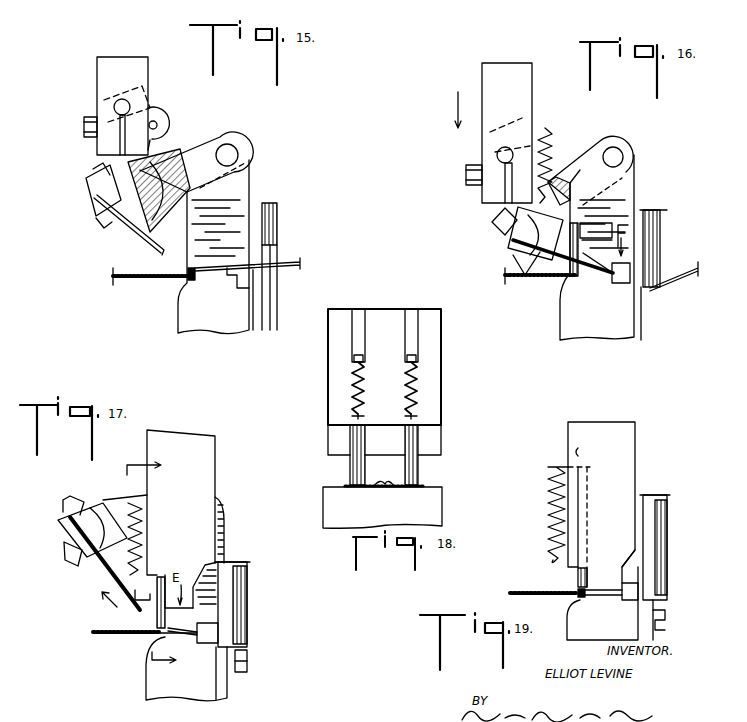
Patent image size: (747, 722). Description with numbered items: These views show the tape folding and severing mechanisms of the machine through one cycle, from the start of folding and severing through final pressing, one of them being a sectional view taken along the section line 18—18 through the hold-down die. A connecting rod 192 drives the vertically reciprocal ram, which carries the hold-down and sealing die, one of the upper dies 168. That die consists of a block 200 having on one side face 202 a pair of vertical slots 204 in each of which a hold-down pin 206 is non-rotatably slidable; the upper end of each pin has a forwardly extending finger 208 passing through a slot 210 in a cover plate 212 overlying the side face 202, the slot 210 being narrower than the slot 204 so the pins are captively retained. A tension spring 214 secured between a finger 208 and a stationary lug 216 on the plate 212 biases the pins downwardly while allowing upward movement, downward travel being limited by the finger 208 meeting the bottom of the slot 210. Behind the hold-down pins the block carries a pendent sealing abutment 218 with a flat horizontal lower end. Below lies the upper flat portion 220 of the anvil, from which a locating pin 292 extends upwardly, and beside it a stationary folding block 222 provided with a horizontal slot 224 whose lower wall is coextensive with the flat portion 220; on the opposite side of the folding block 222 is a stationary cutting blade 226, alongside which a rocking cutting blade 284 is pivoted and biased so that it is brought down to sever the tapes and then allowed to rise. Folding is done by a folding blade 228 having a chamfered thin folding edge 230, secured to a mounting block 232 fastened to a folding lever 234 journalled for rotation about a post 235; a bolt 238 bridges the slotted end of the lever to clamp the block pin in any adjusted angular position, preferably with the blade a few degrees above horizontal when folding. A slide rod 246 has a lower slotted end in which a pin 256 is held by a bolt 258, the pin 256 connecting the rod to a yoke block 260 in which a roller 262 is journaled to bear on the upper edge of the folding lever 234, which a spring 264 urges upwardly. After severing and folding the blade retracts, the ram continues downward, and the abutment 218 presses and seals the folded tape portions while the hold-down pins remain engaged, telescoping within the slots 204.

In FIG. 17, the section line 18— 18 is at (160, 565).
In FIG. 15, the upper dies 168 is at (288, 190).
In FIG. 16, the upper dies 168 is at (650, 178).
In FIG. 17, the upper dies 168 is at (235, 494).
In FIG. 15, the connecting rod 192 is at (195, 267).
In FIG. 17, the block 200 is at (213, 467).
In FIG. 19, the block 200 is at (630, 464).
In FIG. 19, the side face 202 is at (580, 450).
In FIG. 18, the vertical slots 204 is at (357, 318).
In FIG. 19, the vertical slots 204 is at (590, 518).
In FIG. 18, the hold-down pin 206 is at (420, 467).
In FIG. 18, the finger 208 is at (418, 360).
In FIG. 19, the finger 208 is at (558, 467).
In FIG. 16, the slot 210 is at (597, 247).
In FIG. 18, the slot 210 is at (441, 326).
In FIG. 17, the cover plate 212 is at (150, 446).
In FIG. 18, the cover plate 212 is at (441, 369).
In FIG. 19, the cover plate 212 is at (576, 487).
In FIG. 18, the tension spring 214 is at (418, 388).
In FIG. 18, the stationary lug 216 is at (352, 416).
In FIG. 19, the stationary lug 216 is at (556, 566).
In FIG. 16, the sealing abutment 218 is at (590, 222).
In FIG. 17, the sealing abutment 218 is at (200, 580).
In FIG. 18, the sealing abutment 218 is at (436, 440).
In FIG. 19, the sealing abutment 218 is at (613, 575).
In FIG. 15, the upper flat portion 220 is at (200, 279).
In FIG. 16, the upper flat portion 220 is at (572, 316).
In FIG. 18, the upper flat portion 220 is at (438, 494).
In FIG. 15, the folding block 222 is at (236, 300).
In FIG. 16, the folding block 222 is at (625, 284).
In FIG. 17, the folding block 222 is at (220, 633).
In FIG. 19, the folding block 222 is at (632, 600).
In FIG. 15, the horizontal slot 224 is at (226, 279).
In FIG. 15, the stationary cutting blade 226 is at (253, 307).
In FIG. 16, the stationary cutting blade 226 is at (641, 310).
In FIG. 17, the stationary cutting blade 226 is at (222, 684).
In FIG. 19, the stationary cutting blade 226 is at (648, 603).
In FIG. 15, the folding blade 228 is at (129, 225).
In FIG. 17, the folding blade 228 is at (100, 575).
In FIG. 15, the folding edge 230 is at (163, 204).
In FIG. 17, the folding edge 230 is at (135, 608).
In FIG. 15, the mounting block 232 is at (159, 190).
In FIG. 17, the mounting block 232 is at (100, 505).
In FIG. 15, the folding lever 234 is at (200, 140).
In FIG. 16, the folding lever 234 is at (596, 150).
In FIG. 17, the folding lever 234 is at (118, 504).
In FIG. 15, the post 235 is at (243, 198).
In FIG. 15, the bolt 238 is at (92, 168).
In FIG. 16, the bolt 238 is at (496, 228).
In FIG. 17, the bolt 238 is at (80, 498).
In FIG. 15, the slide rod 246 is at (97, 82).
In FIG. 16, the slide rod 246 is at (532, 81).
In FIG. 15, the pin 256 is at (114, 106).
In FIG. 16, the pin 256 is at (497, 155).
In FIG. 15, the bolt 258 is at (85, 129).
In FIG. 16, the bolt 258 is at (468, 184).
In FIG. 15, the yoke block 260 is at (160, 108).
In FIG. 15, the roller 262 is at (165, 117).
In FIG. 16, the spring 264 is at (552, 128).
In FIG. 15, the rocking cutting blade 284 is at (277, 217).
In FIG. 16, the rocking cutting blade 284 is at (661, 231).
In FIG. 17, the rocking cutting blade 284 is at (247, 581).
In FIG. 19, the rocking cutting blade 284 is at (660, 566).
In FIG. 18, the locating pin 292 is at (389, 482).